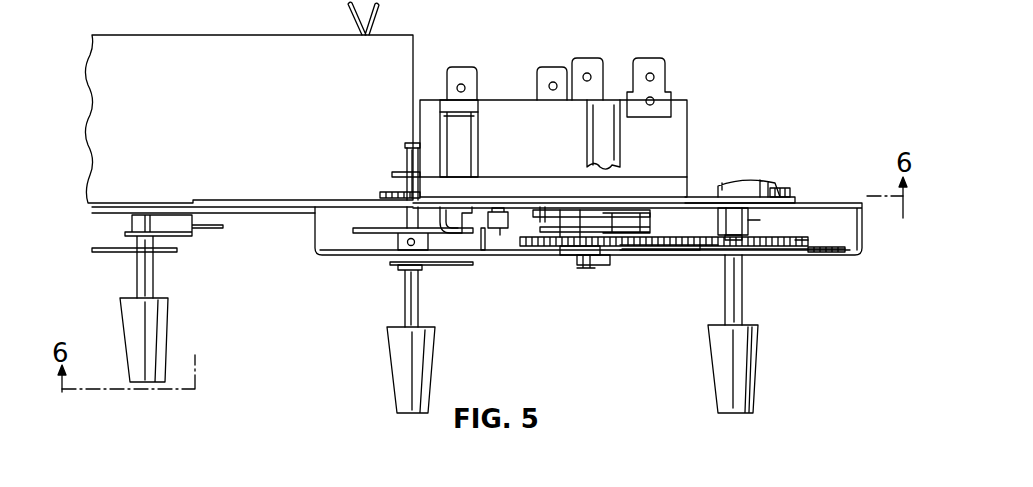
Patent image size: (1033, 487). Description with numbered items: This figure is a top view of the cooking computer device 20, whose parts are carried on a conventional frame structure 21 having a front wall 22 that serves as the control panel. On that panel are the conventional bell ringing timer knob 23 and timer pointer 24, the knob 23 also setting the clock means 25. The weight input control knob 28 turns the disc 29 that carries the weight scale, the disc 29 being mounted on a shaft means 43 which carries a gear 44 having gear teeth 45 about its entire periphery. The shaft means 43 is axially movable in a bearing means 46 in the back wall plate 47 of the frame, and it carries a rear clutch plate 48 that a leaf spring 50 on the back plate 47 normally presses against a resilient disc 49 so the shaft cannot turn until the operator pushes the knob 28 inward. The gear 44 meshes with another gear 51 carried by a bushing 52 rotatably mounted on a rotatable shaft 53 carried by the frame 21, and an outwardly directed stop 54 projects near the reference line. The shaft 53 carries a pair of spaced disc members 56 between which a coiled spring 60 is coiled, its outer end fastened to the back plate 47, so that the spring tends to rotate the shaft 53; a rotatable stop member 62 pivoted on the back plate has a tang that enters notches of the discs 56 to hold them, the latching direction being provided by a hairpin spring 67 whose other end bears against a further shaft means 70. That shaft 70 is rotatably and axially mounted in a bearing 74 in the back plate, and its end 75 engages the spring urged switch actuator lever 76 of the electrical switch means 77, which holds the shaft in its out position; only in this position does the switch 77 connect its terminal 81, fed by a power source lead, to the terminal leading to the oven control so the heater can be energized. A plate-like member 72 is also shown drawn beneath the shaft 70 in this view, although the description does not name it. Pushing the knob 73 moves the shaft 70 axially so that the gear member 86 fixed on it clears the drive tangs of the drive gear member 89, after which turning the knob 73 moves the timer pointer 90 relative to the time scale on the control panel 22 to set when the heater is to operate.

The cooking computer device 20 is at (803, 68).
The frame structure 21 is at (866, 238).
The front wall 22 is at (840, 257).
The timer settable knob 23 is at (160, 330).
The timer pointer 24 is at (121, 252).
The clock means 25 is at (196, 268).
The control knob 28 is at (758, 368).
The disc 29 is at (710, 250).
The shaft means 43 is at (742, 295).
The gear 44 is at (790, 237).
The gear teeth 45 is at (812, 247).
The bearing means 46 is at (748, 222).
The back wall plate 47 is at (798, 238).
The rear clutch plate 48 is at (746, 186).
The resilient disc 49 is at (752, 192).
The leaf spring 50 is at (735, 190).
The gear 51 is at (556, 250).
The bushing 52 is at (575, 260).
The rotatable shaft 53 is at (602, 226).
The stop 54 is at (588, 268).
The disc members 56 is at (642, 228).
The coiled spring 60 is at (563, 220).
The rotatable stop member 62 is at (482, 248).
The hairpin spring 67 is at (496, 230).
The shaft means 70 is at (406, 290).
The plate 72 is at (376, 234).
The knob 73 is at (398, 355).
The bearing 74 is at (444, 210).
The end 75 is at (407, 160).
The switch actuator lever 76 is at (410, 143).
The electrical switch means 77 is at (505, 100).
The terminal 81 is at (667, 80).
The gear member 86 is at (396, 174).
The gear member 89 is at (383, 196).
The timer pointer 90 is at (466, 267).